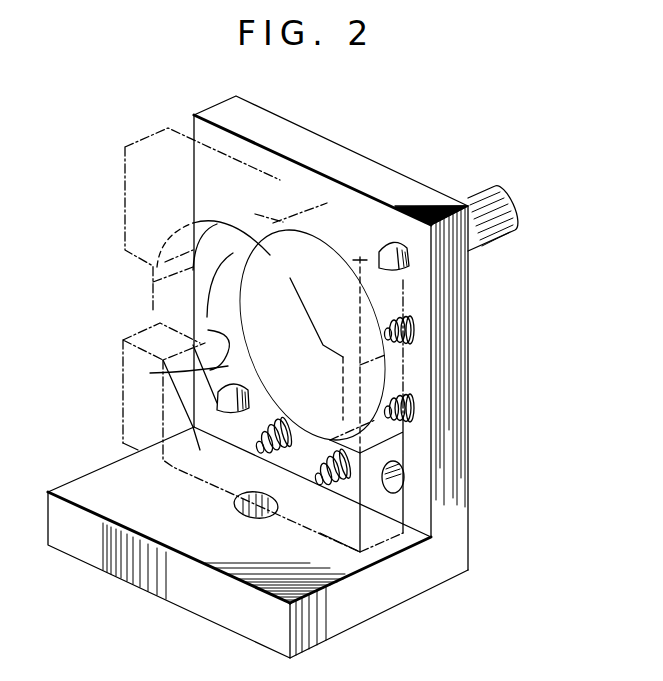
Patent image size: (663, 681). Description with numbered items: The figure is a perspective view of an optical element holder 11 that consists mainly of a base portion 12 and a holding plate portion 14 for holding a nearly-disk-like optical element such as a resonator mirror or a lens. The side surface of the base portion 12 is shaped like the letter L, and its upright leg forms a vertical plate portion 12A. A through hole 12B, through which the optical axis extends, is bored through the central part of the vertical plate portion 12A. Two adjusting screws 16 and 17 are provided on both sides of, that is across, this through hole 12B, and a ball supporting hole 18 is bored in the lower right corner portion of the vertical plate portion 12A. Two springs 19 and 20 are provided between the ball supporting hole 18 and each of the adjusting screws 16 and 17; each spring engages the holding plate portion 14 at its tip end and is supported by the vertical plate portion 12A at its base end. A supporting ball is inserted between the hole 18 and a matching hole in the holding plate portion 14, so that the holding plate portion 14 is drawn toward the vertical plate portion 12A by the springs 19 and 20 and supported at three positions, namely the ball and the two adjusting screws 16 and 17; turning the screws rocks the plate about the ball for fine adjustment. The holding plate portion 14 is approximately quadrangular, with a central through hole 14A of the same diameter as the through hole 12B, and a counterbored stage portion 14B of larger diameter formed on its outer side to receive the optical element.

The optical element holder 11 is at (433, 150).
The base portion 12 is at (424, 575).
The vertical plate portion 12A is at (464, 365).
The through hole 12B is at (250, 311).
The holding plate portion 14 is at (125, 162).
The through hole 14A is at (123, 362).
The counterbored stage portion 14B is at (163, 278).
The adjusting screw 16 is at (406, 254).
The adjusting screw 17 is at (216, 400).
The ball supporting hole 18 is at (404, 471).
The spring 19 is at (412, 333).
The spring 20 is at (258, 442).